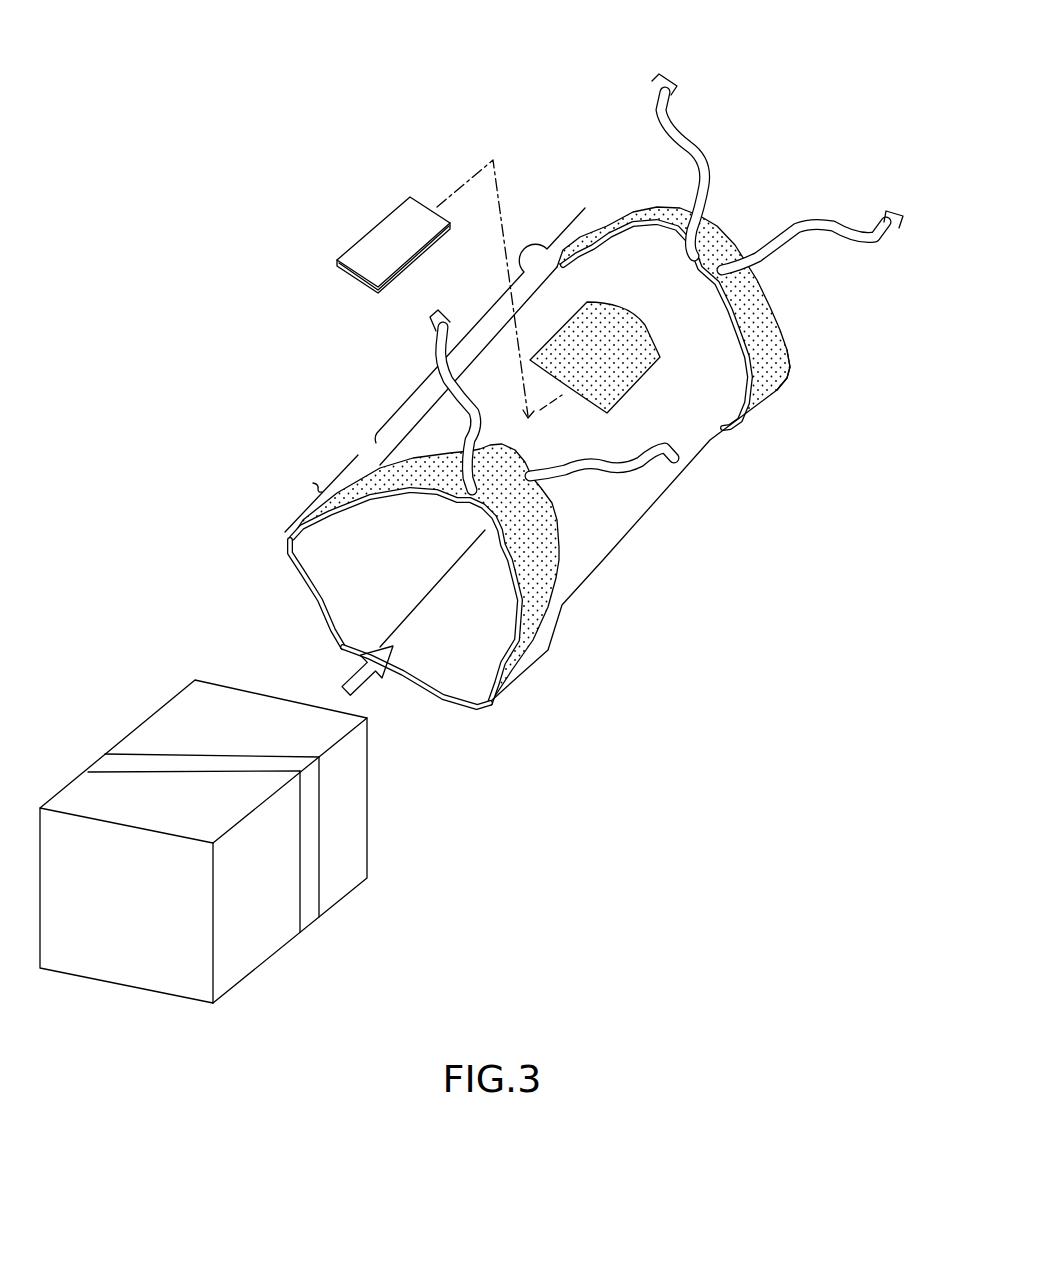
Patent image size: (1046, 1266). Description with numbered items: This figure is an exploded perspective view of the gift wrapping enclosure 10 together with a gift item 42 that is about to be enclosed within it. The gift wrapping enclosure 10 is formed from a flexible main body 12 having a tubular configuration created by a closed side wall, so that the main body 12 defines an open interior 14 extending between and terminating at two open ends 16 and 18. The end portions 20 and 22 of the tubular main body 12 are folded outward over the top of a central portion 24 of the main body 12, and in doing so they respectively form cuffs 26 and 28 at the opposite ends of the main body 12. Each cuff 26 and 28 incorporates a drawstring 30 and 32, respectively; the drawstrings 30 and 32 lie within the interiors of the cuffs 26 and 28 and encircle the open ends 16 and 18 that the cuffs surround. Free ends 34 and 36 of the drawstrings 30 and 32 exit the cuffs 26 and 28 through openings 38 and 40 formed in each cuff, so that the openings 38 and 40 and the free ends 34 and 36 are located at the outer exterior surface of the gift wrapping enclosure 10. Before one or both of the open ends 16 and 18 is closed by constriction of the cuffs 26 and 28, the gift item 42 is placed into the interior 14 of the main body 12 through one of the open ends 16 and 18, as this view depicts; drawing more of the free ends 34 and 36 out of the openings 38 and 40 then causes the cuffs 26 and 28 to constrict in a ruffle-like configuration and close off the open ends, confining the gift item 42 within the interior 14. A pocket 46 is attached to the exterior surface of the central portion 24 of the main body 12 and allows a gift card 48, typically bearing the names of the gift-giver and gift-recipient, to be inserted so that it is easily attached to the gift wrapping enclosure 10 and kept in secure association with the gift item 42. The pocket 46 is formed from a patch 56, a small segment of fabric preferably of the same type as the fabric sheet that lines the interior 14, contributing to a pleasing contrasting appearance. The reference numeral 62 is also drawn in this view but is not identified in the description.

The gift wrapping enclosure 10 is at (670, 542).
The main body 12 is at (600, 567).
The interior 14 is at (448, 677).
The open end 16 is at (340, 624).
The open end 18 is at (783, 327).
The end portion 20 is at (321, 493).
The end portion 22 is at (566, 230).
The central portion 24 is at (470, 338).
The cuff 26 is at (357, 510).
The cuff 28 is at (777, 390).
The drawstring 30 is at (496, 464).
The drawstring 32 is at (695, 254).
The free end 34 is at (660, 78).
The free end 36 is at (890, 227).
The opening 38 is at (720, 247).
The opening 40 is at (740, 260).
The gift item 42 is at (108, 968).
The pocket 46 is at (584, 400).
The gift card 48 is at (368, 242).
The patch 56 is at (640, 337).
The interior seam line 62 is at (405, 615).